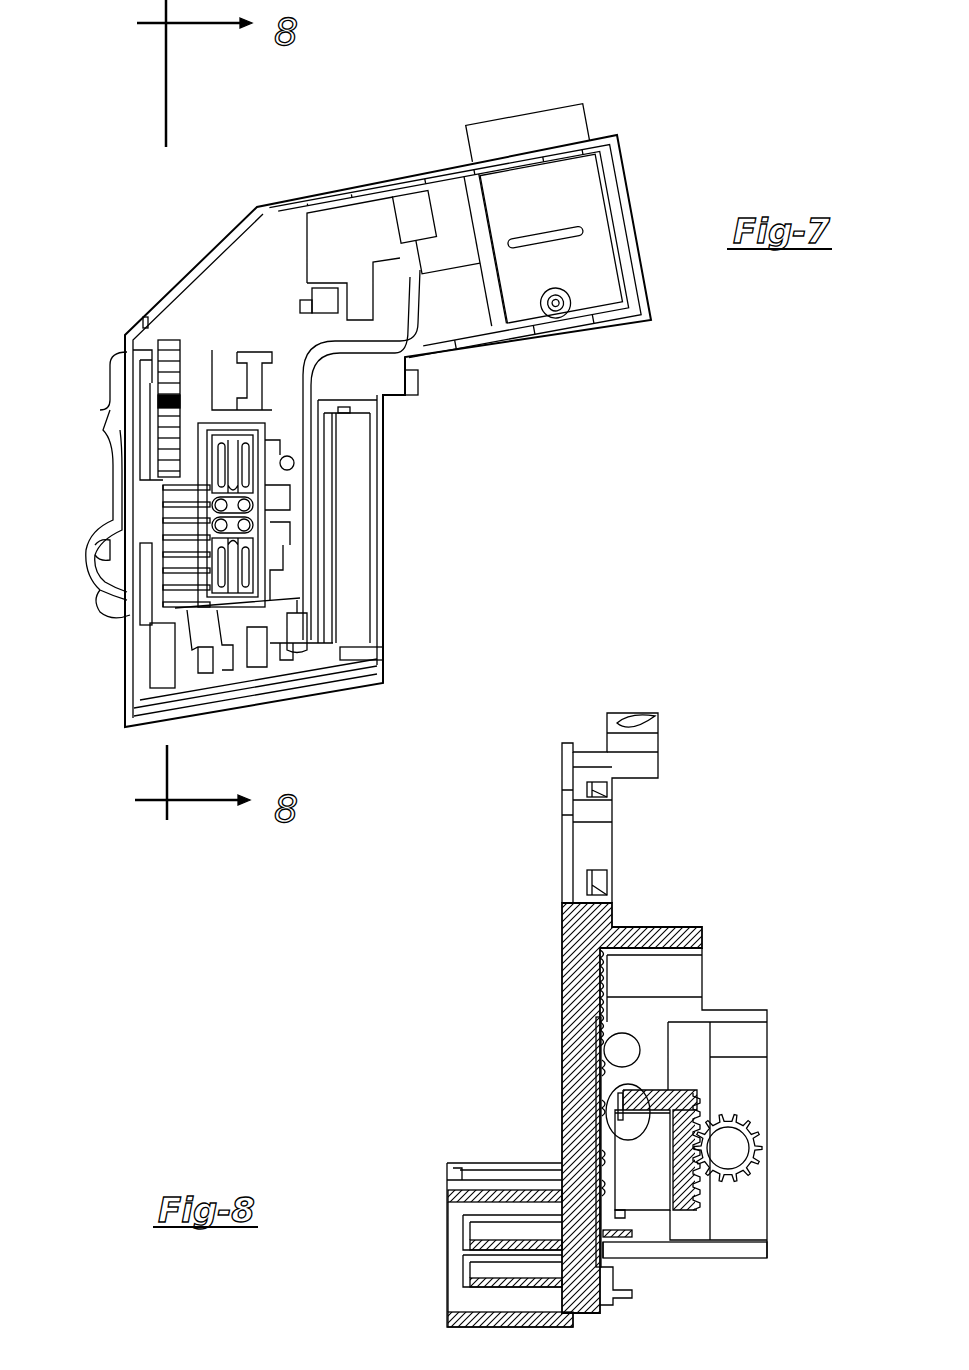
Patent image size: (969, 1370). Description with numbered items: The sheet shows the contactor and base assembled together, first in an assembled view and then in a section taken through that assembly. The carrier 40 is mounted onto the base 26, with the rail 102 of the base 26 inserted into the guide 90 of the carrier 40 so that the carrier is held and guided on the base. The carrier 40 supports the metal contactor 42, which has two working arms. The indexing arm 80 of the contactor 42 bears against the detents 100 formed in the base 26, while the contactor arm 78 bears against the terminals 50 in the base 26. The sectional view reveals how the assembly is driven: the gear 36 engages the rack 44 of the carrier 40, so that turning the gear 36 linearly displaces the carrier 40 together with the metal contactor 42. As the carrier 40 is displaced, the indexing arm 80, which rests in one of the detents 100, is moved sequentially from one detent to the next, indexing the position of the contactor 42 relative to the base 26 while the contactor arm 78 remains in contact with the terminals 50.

In FIG. 7, the base 26 is at (598, 328).
In FIG. 8, the gear 36 is at (768, 1150).
In FIG. 7, the carrier 40 is at (265, 512).
In FIG. 8, the carrier 40 is at (697, 1195).
In FIG. 8, the contactor 42 is at (640, 1125).
In FIG. 8, the rack 44 is at (693, 1107).
In FIG. 7, the terminals 50 is at (223, 373).
In FIG. 7, the contactor arm 78 is at (222, 468).
In FIG. 7, the indexing arm 80 is at (113, 515).
In FIG. 8, the indexing arm 80 is at (600, 1143).
In FIG. 7, the guide 90 is at (148, 690).
In FIG. 7, the detents 100 is at (100, 410).
In FIG. 8, the detents 100 is at (605, 1035).
In FIG. 7, the rail 102 is at (108, 600).